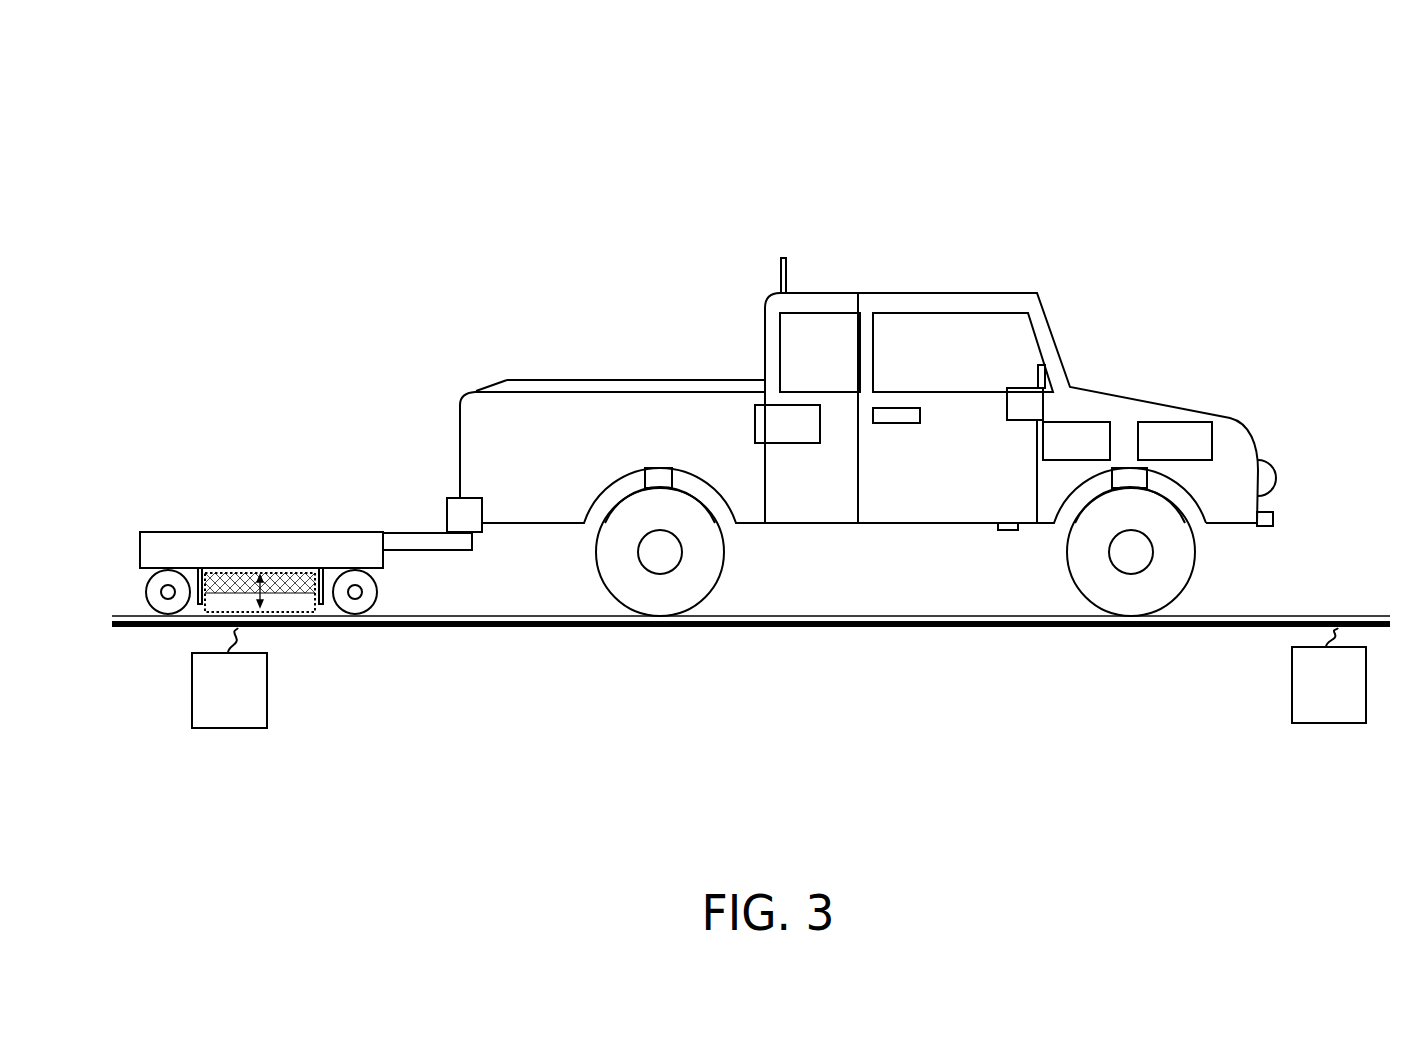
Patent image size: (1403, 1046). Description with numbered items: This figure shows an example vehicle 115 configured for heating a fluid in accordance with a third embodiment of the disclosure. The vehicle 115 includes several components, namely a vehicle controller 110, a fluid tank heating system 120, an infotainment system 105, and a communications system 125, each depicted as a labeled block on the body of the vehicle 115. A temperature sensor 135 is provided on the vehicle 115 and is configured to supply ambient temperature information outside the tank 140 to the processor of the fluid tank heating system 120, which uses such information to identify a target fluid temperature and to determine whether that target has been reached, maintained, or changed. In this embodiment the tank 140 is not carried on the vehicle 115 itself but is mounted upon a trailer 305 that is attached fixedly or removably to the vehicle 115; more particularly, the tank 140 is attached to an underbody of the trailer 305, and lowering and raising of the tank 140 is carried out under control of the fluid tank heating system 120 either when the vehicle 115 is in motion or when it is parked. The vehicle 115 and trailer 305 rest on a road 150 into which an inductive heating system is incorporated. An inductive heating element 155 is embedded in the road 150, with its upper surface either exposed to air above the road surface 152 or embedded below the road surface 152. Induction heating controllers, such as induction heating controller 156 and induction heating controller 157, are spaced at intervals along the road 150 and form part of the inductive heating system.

The vehicle 115 is at (1110, 120).
The infotainment system 105 is at (1040, 365).
The communications system 125 is at (769, 435).
The vehicle controller 110 is at (1058, 452).
The fluid tank heating system 120 is at (1156, 452).
The temperature sensor 135 is at (1008, 530).
The trailer 305 is at (347, 509).
The tank 140 is at (239, 552).
The road 150 is at (1323, 557).
The road surface 152 is at (1233, 602).
The inductive heating element 155 is at (500, 629).
The induction heating controller 156 is at (210, 701).
The induction heating controller 157 is at (1310, 696).